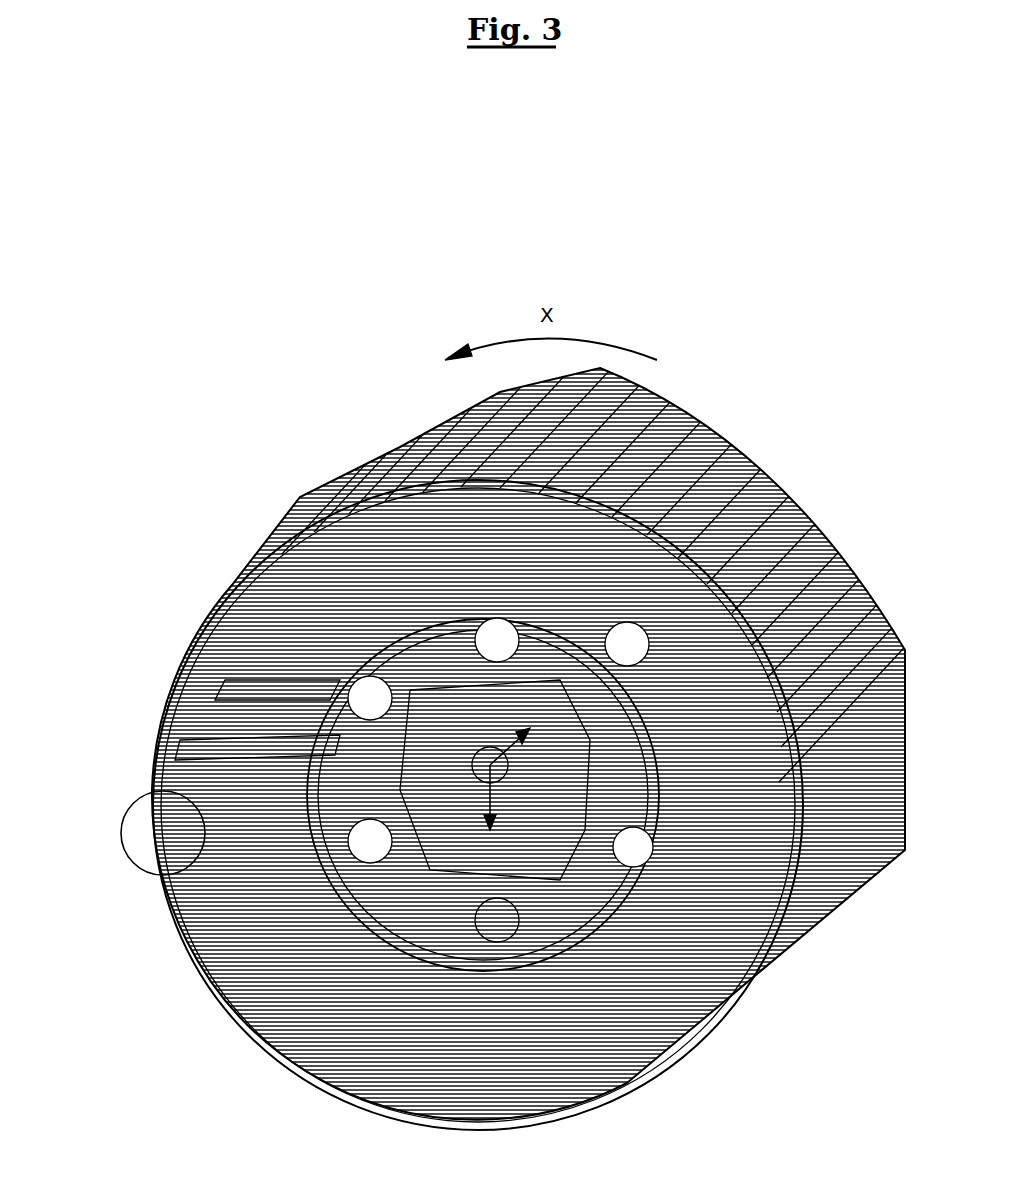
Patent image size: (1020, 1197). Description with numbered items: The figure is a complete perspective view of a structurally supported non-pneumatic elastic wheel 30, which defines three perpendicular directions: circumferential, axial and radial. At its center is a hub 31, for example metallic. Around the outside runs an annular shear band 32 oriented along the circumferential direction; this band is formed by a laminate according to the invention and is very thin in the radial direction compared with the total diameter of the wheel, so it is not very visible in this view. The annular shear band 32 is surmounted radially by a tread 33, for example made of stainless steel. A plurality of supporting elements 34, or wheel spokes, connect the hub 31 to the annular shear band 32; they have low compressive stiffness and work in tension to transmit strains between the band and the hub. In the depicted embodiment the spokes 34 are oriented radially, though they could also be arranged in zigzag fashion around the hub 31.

The non-pneumatic elastic wheel 30 is at (737, 328).
The hub 31 is at (360, 902).
The annular shear band 32 is at (160, 832).
The tread 33 is at (724, 489).
The supporting elements 34 is at (255, 622).